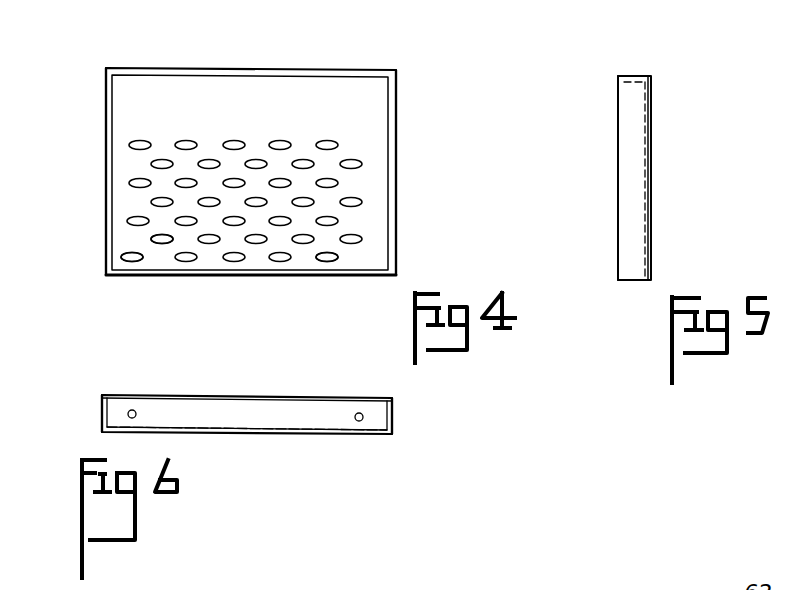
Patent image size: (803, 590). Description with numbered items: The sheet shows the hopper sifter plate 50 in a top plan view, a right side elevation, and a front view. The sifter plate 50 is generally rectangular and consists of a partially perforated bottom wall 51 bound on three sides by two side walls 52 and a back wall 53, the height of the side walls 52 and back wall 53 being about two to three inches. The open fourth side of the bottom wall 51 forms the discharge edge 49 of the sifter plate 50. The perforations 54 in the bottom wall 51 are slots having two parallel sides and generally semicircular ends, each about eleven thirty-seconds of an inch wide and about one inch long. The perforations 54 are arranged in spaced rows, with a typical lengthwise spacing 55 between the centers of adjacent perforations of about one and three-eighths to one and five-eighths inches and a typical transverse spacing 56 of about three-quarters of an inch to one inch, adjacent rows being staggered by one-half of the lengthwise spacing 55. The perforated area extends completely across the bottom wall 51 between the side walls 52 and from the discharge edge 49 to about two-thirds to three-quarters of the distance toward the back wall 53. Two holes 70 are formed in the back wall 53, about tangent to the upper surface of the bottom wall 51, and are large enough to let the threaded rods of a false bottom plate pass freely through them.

In FIG. 4, the discharge edge 49 is at (236, 276).
In FIG. 4, the hopper sifter plate 50 is at (340, 62).
In FIG. 5, the hopper sifter plate 50 is at (644, 69).
In FIG. 6, the hopper sifter plate 50 is at (394, 391).
In FIG. 4, the bottom wall 51 is at (201, 88).
In FIG. 5, the bottom wall 51 is at (645, 218).
In FIG. 6, the bottom wall 51 is at (255, 414).
In FIG. 4, the side walls 52 is at (106, 193).
In FIG. 5, the side walls 52 is at (527, 160).
In FIG. 6, the side walls 52 is at (102, 415).
In FIG. 4, the back wall 53 is at (277, 68).
In FIG. 5, the back wall 53 is at (629, 75).
In FIG. 6, the back wall 53 is at (288, 396).
In FIG. 4, the perforations 54 is at (325, 262).
In FIG. 4, the lengthwise spacing 55 is at (323, 243).
In FIG. 4, the transverse spacing 56 is at (161, 212).
In FIG. 6, the holes 70 is at (134, 409).